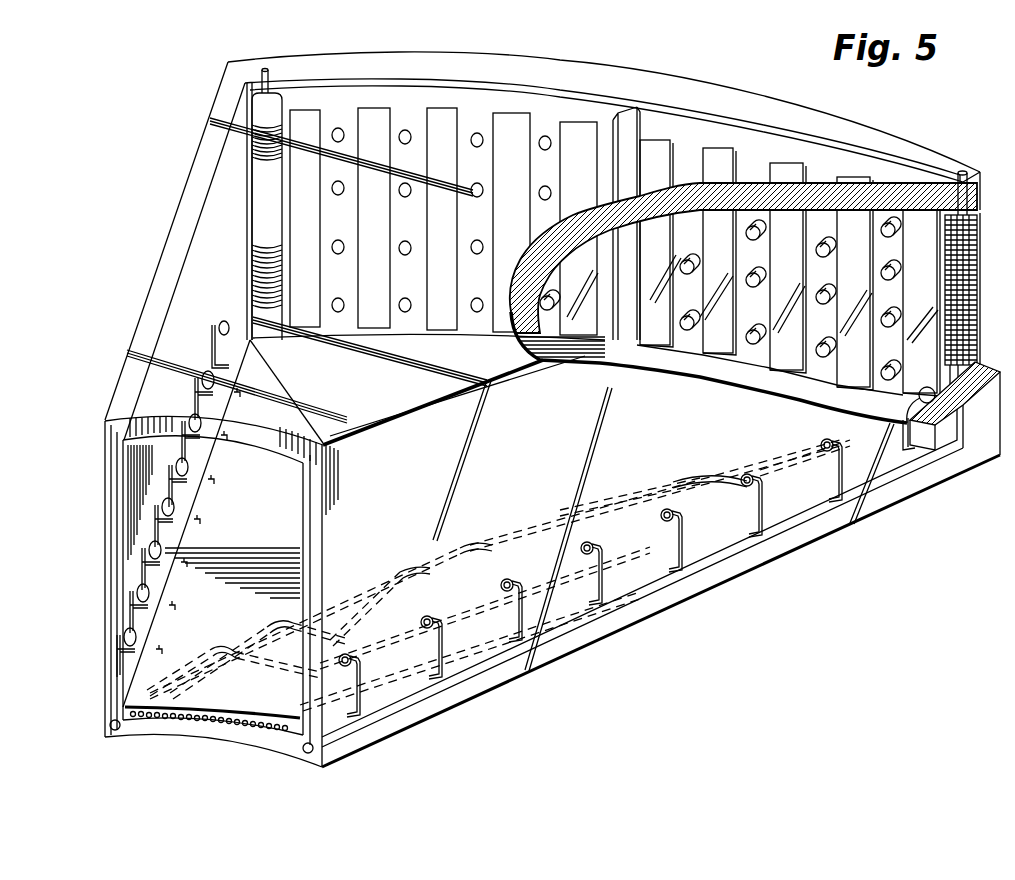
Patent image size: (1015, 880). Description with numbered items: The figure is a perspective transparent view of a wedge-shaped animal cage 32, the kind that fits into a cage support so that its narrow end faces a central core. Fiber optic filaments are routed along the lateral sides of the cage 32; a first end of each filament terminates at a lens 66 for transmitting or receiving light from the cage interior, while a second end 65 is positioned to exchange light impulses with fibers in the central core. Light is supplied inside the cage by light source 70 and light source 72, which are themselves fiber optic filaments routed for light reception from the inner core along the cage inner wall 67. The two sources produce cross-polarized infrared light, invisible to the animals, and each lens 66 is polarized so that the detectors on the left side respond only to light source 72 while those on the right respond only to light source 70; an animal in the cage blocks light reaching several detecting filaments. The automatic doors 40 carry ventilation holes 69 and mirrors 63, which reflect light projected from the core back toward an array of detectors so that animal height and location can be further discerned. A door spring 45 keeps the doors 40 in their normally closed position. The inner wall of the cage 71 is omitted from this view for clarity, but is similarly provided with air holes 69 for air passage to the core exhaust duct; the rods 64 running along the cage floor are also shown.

The wedge-shaped cage 32 is at (882, 112).
The doors 40 is at (600, 333).
The door spring 45 is at (977, 273).
The mirrors 63 is at (905, 228).
The rods 64 is at (765, 505).
The second end 65 is at (213, 721).
The lens 66 is at (163, 548).
The cage inner wall 67 is at (157, 727).
The ventilation holes 69 is at (752, 226).
The light source 70 is at (214, 322).
The inner wall of the cage 71 is at (152, 672).
The light source 72 is at (917, 405).